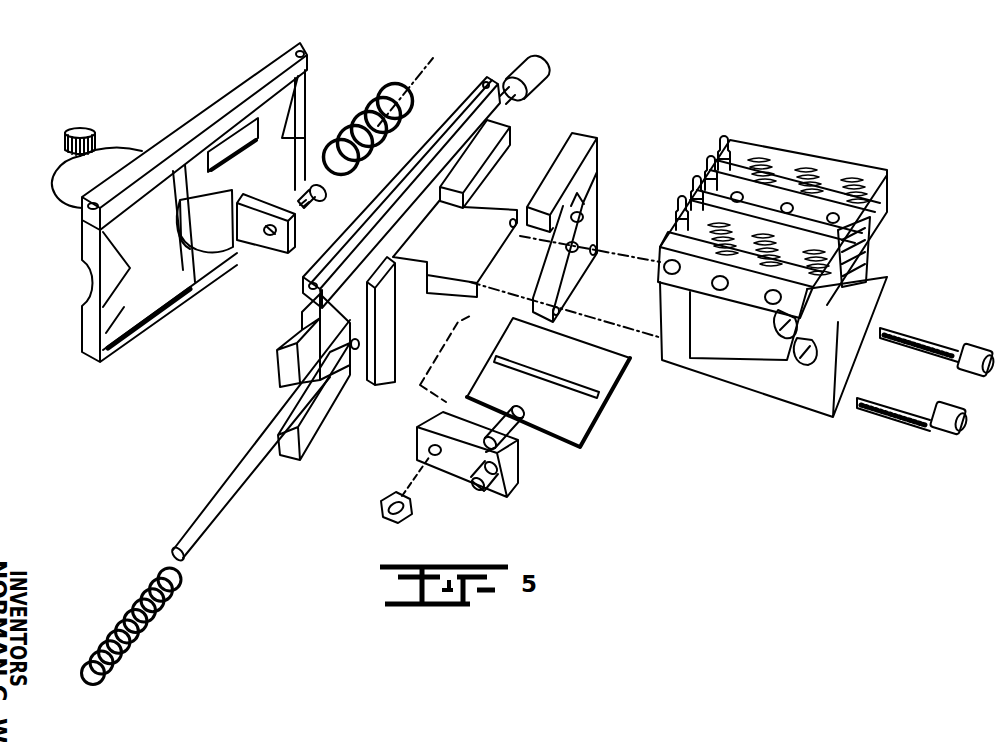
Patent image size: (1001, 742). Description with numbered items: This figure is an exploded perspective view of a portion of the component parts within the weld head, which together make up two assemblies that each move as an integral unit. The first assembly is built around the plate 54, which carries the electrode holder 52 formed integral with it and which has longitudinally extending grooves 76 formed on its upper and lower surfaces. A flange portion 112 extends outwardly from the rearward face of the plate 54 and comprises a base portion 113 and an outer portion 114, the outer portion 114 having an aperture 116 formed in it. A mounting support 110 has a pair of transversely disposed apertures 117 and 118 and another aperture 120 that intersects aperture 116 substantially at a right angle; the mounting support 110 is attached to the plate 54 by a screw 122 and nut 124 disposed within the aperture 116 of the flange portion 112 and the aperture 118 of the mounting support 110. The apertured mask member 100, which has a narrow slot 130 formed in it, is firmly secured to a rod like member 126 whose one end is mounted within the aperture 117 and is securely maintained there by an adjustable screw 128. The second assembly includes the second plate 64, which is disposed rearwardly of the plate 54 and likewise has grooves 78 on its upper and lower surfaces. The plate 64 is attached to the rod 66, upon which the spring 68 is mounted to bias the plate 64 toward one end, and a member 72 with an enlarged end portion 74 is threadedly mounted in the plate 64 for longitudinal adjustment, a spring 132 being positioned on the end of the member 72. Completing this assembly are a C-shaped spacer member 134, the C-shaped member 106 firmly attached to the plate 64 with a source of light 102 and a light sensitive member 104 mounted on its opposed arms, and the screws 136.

The electrode holder 52 is at (52, 168).
The plate 54 is at (80, 239).
The grooves 76 is at (241, 83).
The spring 132 is at (379, 83).
The grooves 78 is at (462, 98).
The enlarged end portion 74 is at (543, 80).
The member 72 is at (505, 101).
The C-shaped spacer member 134 is at (590, 134).
The light sensitive member 104 is at (838, 218).
The screw 122 is at (327, 195).
The outer portion 114 is at (280, 231).
The base portion 113 is at (204, 224).
The aperture 116 is at (276, 236).
The flange portion 112 is at (252, 240).
The second plate 64 is at (292, 321).
The slot 130 is at (557, 378).
The mask member 100 is at (597, 421).
The source of light 102 is at (797, 357).
The C-shaped member 106 is at (745, 383).
The screws 136 is at (946, 378).
The adjustable screw 128 is at (489, 431).
The aperture 118 is at (429, 450).
The aperture 117 is at (496, 473).
The aperture 120 is at (489, 452).
The rod like member 126 is at (477, 491).
The mounting support 110 is at (507, 498).
The nut 124 is at (381, 506).
The rod 66 is at (244, 470).
The spring 68 is at (148, 590).